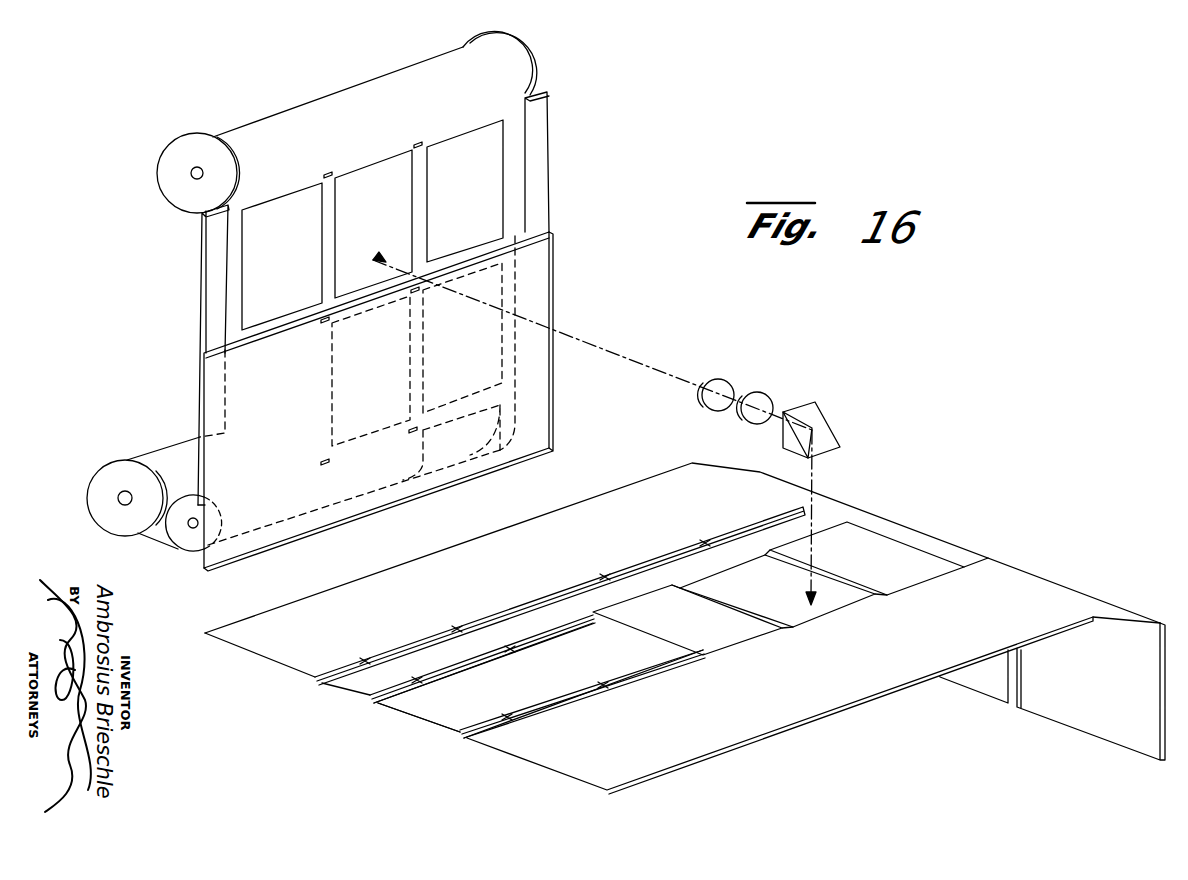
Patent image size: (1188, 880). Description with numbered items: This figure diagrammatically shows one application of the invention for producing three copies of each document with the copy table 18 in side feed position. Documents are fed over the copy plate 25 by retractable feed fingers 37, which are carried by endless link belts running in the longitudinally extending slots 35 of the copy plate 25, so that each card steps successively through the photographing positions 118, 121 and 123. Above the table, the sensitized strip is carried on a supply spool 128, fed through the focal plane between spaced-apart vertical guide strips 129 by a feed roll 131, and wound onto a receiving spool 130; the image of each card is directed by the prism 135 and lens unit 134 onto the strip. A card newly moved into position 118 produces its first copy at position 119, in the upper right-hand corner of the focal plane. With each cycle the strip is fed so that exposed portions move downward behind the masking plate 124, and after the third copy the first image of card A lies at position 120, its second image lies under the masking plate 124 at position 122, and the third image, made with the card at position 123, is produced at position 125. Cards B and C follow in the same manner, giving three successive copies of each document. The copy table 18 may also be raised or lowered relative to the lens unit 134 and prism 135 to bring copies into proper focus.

The copy table 18 is at (285, 668).
The copy plate 25 is at (815, 713).
The longitudinally extending slots 35 is at (543, 708).
The retractable feed fingers 37 is at (455, 628).
The photographing position 118 is at (750, 638).
The image position on sensitized strip 119 is at (375, 206).
The image position on sensitized strip 120 is at (376, 390).
The photographing position 121 is at (835, 612).
The image position on sensitized strip 122 is at (410, 372).
The photographing position 123 is at (915, 580).
The masking plate 124 is at (540, 273).
The image position on sensitized strip 125 is at (244, 313).
The supply spool 128 is at (196, 146).
The vertical guide strips 129 is at (212, 285).
The receiving spool 130 is at (123, 470).
The feed roll 131 is at (185, 546).
The lens unit 134 is at (753, 418).
The prism 135 is at (822, 422).